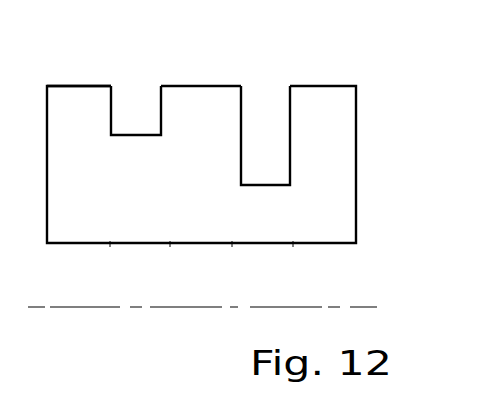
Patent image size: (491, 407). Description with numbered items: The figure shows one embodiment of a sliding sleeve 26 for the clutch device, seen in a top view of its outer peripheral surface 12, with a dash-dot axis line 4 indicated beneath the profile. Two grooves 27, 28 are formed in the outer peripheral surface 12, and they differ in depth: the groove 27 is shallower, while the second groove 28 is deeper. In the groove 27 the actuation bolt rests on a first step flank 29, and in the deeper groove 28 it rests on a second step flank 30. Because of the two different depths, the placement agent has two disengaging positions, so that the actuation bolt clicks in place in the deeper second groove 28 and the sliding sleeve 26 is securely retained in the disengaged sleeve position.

The axis of rotation 4 is at (49, 305).
The outer peripheral surface 12 is at (82, 84).
The sliding sleeve 26 is at (227, 78).
The groove 27 is at (138, 114).
The groove 28 is at (263, 115).
The first step flank 29 is at (110, 113).
The second step flank 30 is at (241, 142).